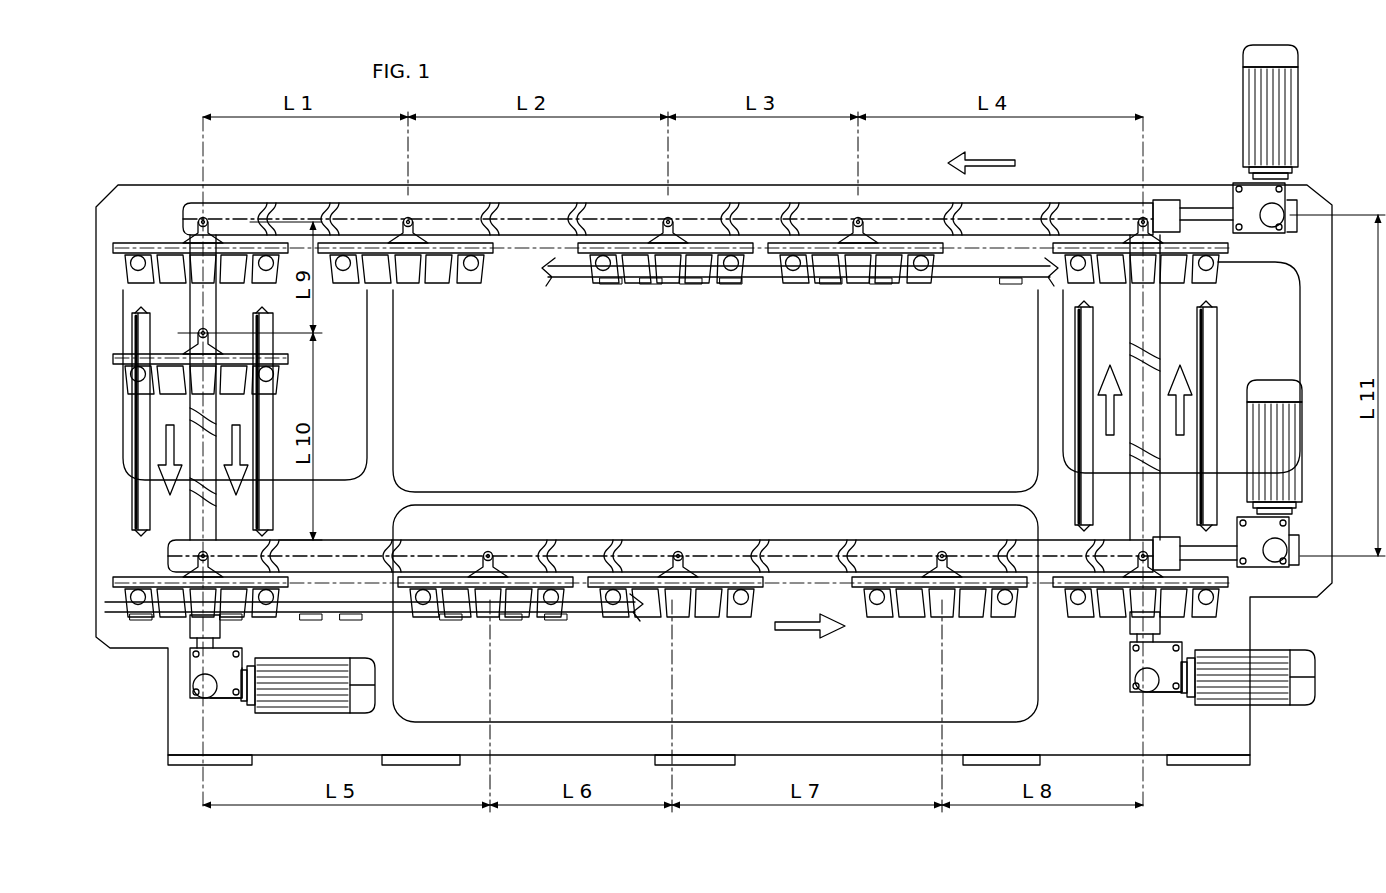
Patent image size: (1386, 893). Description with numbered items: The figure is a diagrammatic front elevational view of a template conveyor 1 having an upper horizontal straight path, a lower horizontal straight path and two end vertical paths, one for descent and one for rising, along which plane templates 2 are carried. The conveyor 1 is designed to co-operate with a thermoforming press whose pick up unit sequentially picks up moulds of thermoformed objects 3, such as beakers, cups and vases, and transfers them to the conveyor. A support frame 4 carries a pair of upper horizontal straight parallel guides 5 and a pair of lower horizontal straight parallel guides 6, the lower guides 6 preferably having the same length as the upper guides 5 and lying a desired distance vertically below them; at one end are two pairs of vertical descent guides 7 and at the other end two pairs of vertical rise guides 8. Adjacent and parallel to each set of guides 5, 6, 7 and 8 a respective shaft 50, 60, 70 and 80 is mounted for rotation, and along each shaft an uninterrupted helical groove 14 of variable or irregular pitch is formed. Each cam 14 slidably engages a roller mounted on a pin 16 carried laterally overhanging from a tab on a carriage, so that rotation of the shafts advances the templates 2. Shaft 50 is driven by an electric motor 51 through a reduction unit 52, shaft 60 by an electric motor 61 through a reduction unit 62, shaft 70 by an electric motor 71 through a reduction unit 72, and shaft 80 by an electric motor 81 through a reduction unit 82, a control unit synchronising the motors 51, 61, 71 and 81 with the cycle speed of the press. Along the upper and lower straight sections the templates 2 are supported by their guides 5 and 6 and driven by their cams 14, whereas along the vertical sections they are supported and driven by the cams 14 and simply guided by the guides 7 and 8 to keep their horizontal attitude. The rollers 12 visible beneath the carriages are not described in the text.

The template conveyor 1 is at (148, 183).
The plane templates 2 is at (118, 356).
The thermoformed objects 3 is at (125, 393).
The support frame 4 is at (180, 745).
The upper horizontal straight parallel guides 5 is at (972, 270).
The lower horizontal straight parallel guides 6 is at (596, 610).
The vertical descent guides 7 is at (266, 488).
The vertical rise guides 8 is at (1085, 345).
The rollers 12 is at (132, 372).
The helical groove cam 14 is at (800, 200).
The pin 16 is at (865, 215).
The shaft 50 is at (1165, 210).
The electric motor 51 is at (1295, 105).
The reduction unit 52 is at (1287, 195).
The shaft 60 is at (882, 540).
The electric motor 61 is at (1302, 488).
The reduction unit 62 is at (1292, 568).
The shaft 70 is at (205, 632).
The electric motor 71 is at (292, 712).
The reduction unit 72 is at (198, 672).
The shaft 80 is at (1130, 625).
The electric motor 81 is at (1305, 690).
The reduction unit 82 is at (1170, 652).